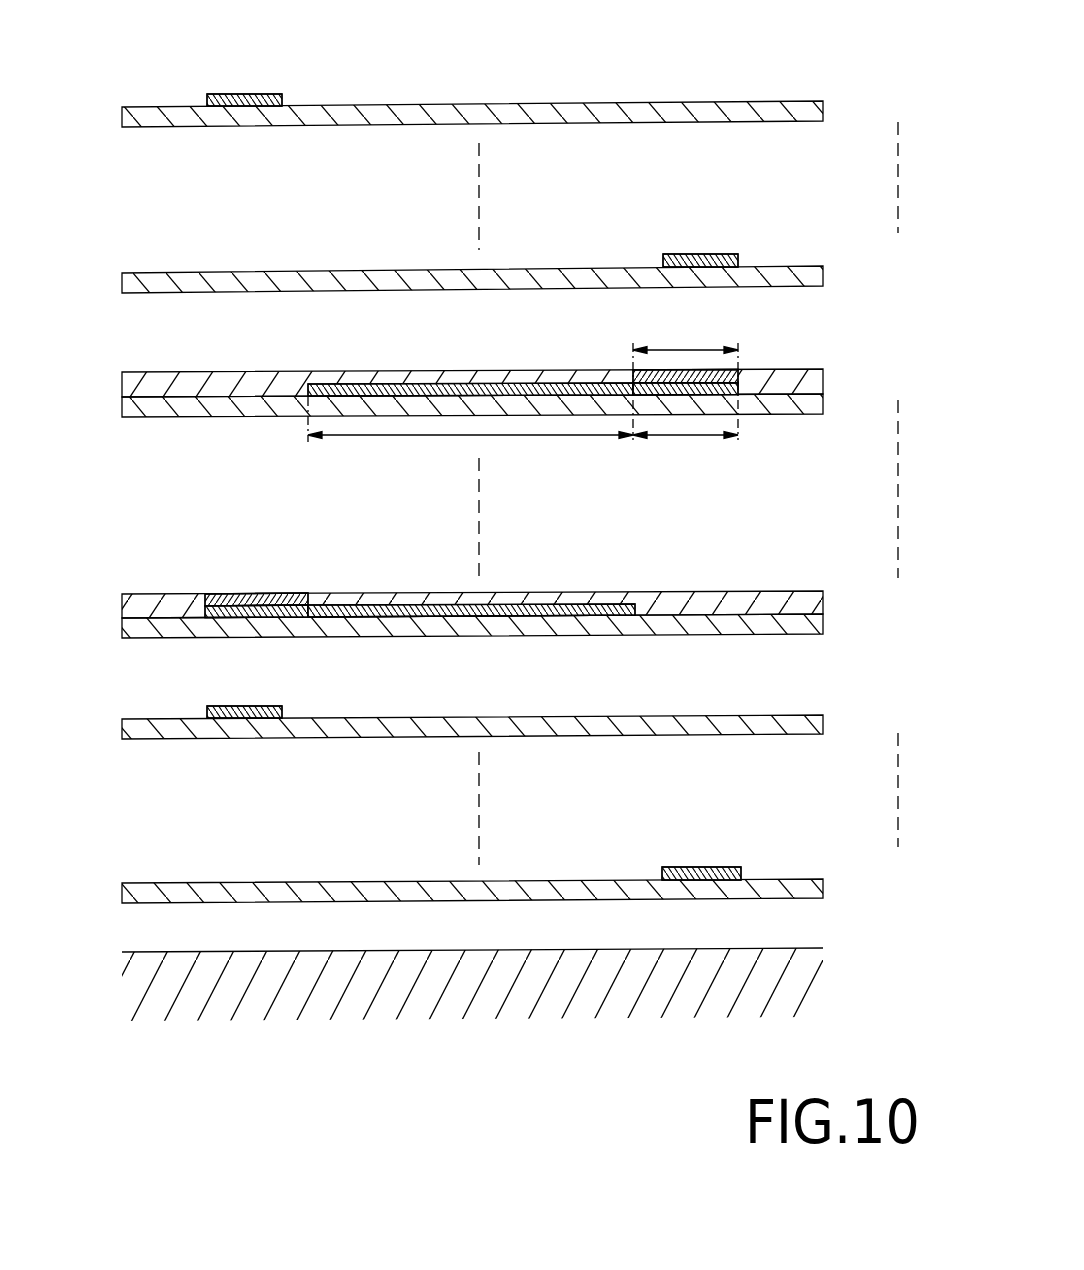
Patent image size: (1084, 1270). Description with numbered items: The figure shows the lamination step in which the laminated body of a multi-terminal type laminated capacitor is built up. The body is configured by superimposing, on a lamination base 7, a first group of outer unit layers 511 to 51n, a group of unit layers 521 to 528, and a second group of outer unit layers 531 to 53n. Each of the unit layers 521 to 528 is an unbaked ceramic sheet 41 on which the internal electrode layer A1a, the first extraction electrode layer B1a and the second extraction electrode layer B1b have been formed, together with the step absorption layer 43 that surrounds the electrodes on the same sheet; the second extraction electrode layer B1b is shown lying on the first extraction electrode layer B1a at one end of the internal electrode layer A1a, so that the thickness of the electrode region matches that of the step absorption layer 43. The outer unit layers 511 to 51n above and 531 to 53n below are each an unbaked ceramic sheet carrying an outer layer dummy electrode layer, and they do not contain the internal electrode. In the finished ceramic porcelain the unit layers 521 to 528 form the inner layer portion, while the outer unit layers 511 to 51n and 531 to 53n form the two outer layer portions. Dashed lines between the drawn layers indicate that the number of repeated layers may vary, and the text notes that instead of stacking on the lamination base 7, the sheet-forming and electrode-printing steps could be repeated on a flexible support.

The outer unit layer 511 is at (493, 92).
The outer unit layer 51n is at (834, 272).
The unit layer 521 is at (495, 396).
The unit layer 528 is at (837, 606).
The outer unit layer 531 is at (495, 706).
The outer unit layer 53n is at (837, 882).
The step absorption layer 43 is at (124, 388).
The unbaked ceramic sheet 41 is at (124, 406).
The lamination base 7 is at (468, 1013).
The internal electrode layer A1a is at (401, 438).
The first extraction electrode layer B1a is at (686, 438).
The second extraction electrode layer B1b is at (684, 349).